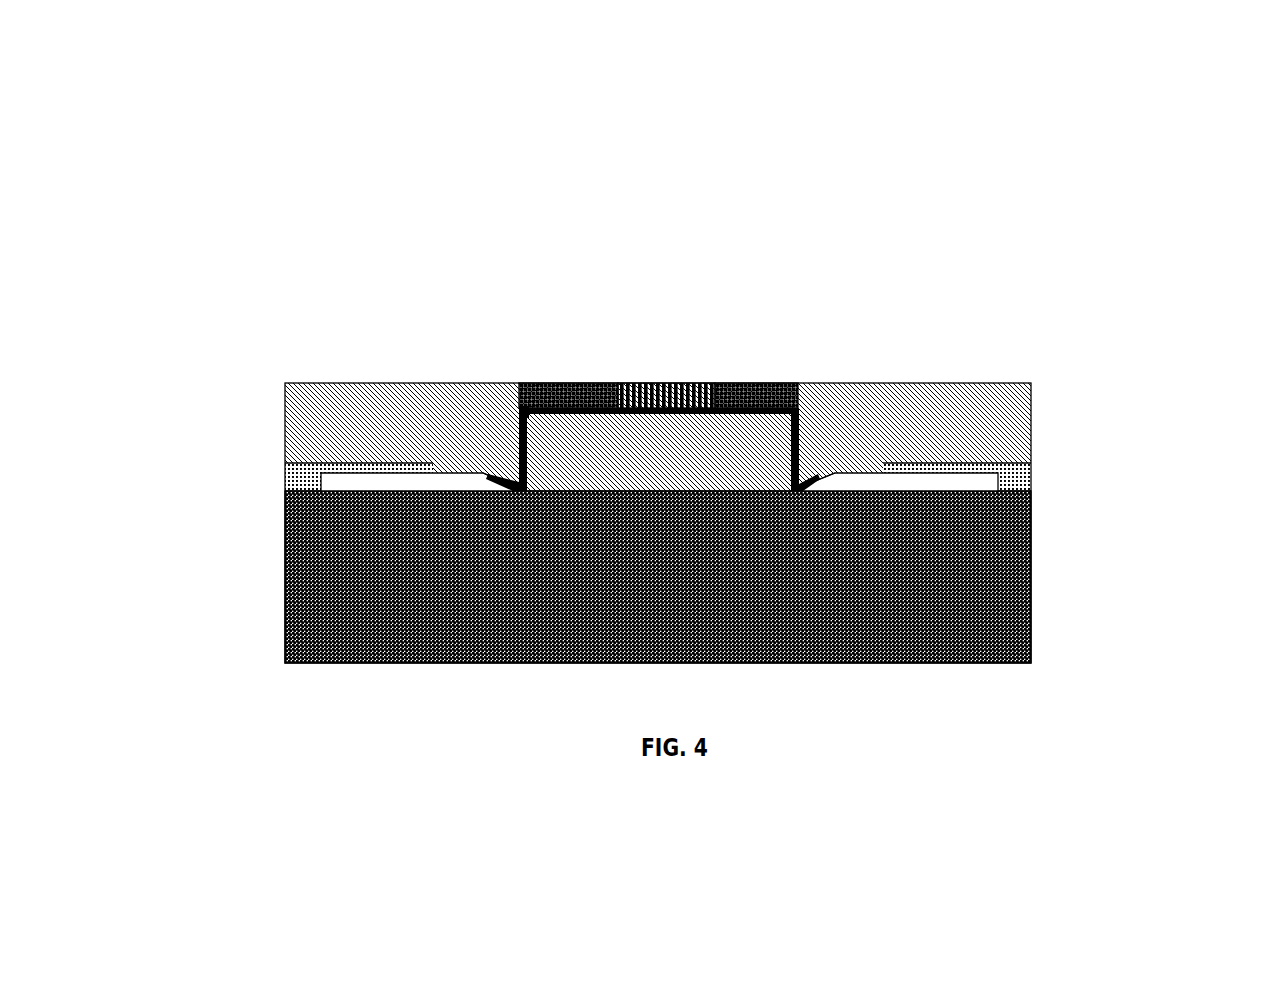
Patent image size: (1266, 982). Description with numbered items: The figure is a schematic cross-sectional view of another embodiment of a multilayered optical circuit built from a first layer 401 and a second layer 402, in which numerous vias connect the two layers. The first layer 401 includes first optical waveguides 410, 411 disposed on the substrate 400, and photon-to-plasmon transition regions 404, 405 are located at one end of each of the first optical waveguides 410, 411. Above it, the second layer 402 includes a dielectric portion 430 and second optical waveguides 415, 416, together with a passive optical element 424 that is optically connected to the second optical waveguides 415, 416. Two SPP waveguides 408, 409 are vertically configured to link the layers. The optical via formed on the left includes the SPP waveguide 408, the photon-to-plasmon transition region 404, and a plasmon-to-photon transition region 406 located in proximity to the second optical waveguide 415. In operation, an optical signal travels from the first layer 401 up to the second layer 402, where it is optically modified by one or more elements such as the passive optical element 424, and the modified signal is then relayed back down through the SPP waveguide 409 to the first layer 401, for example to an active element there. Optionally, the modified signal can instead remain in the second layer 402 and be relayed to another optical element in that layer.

The substrate 400 is at (658, 577).
The first layer 401 is at (258, 456).
The second layer 402 is at (1170, 483).
The photon-to-plasmon transition region 404 is at (480, 468).
The photon-to-plasmon transition region 405 is at (812, 470).
The plasmon-to-photon transition region 406 is at (513, 375).
The SPP waveguide 408 is at (502, 468).
The SPP waveguide 409 is at (793, 415).
The first optical waveguide 410 is at (297, 455).
The first optical waveguide 411 is at (1000, 455).
The second optical waveguide 415 is at (590, 376).
The second optical waveguide 416 is at (757, 376).
The passive optical element 424 is at (658, 376).
The dielectric portion 430 is at (659, 452).